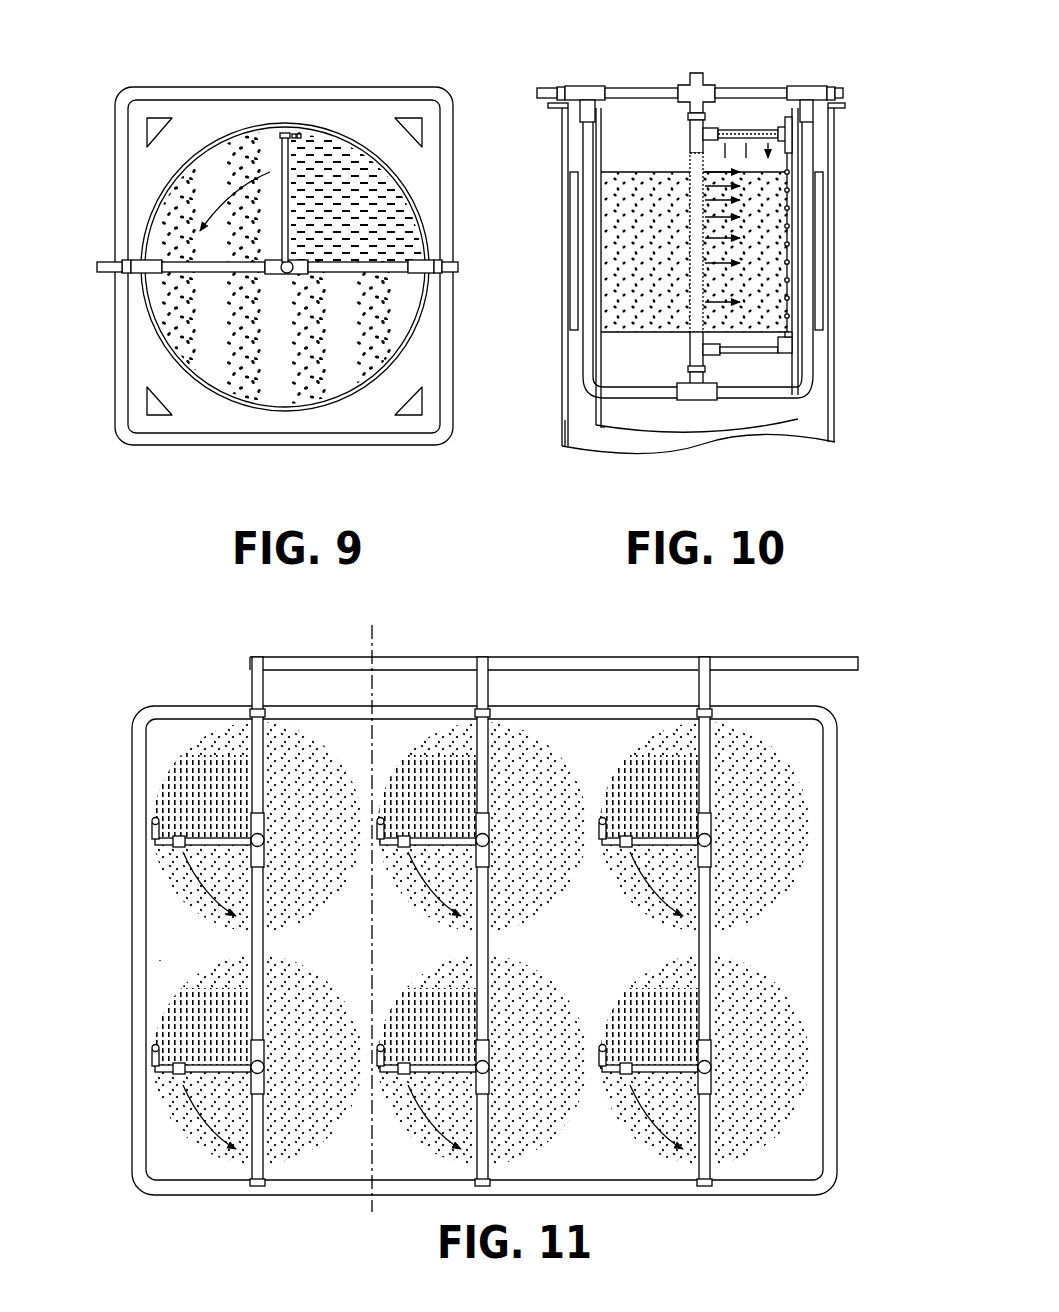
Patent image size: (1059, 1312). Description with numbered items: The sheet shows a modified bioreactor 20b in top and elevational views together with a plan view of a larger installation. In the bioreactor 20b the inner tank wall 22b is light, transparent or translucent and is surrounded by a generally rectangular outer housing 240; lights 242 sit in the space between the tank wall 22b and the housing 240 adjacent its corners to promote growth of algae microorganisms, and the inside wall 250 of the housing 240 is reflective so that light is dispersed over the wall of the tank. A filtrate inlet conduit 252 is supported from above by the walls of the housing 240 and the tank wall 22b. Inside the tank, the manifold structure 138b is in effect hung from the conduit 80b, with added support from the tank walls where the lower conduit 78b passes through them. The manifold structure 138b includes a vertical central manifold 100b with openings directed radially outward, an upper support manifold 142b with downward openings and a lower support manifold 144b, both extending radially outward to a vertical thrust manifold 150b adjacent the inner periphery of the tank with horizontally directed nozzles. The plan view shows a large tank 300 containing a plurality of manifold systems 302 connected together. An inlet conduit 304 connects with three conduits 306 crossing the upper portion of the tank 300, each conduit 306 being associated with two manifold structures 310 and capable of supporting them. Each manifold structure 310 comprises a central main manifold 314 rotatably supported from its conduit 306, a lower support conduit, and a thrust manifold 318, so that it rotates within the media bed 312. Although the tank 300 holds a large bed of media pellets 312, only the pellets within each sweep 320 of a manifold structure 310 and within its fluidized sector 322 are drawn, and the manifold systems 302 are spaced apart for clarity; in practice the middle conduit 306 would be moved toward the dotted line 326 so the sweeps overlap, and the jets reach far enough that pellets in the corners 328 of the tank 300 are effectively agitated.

In FIG. 9, the bioreactor 20b is at (364, 60).
In FIG. 10, the bioreactor 20b is at (737, 55).
In FIG. 9, the inner tank wall 22b is at (163, 349).
In FIG. 10, the inner tank wall 22b is at (600, 131).
In FIG. 9, the conduit 80b is at (185, 261).
In FIG. 10, the conduit 80b is at (650, 92).
In FIG. 10, the central manifold 100b is at (692, 168).
In FIG. 10, the manifold structure 138b is at (658, 434).
In FIG. 10, the upper support manifold 142b is at (745, 128).
In FIG. 10, the lower support manifold 144b is at (767, 355).
In FIG. 10, the thrust manifold 150b is at (790, 157).
In FIG. 9, the outer housing 240 is at (152, 448).
In FIG. 10, the outer housing 240 is at (562, 175).
In FIG. 9, the lights 242 is at (408, 117).
In FIG. 10, the lights 242 is at (818, 222).
In FIG. 10, the inside wall 250 is at (568, 420).
In FIG. 9, the filtrate inlet conduit 252 is at (103, 271).
In FIG. 10, the filtrate inlet conduit 252 is at (548, 89).
In FIG. 10, the lower conduit 78b is at (780, 400).
In FIG. 11, the tank 300 is at (140, 710).
In FIG. 11, the manifold systems 302 is at (410, 746).
In FIG. 11, the inlet conduit 304 is at (635, 656).
In FIG. 11, the conduits 306 is at (265, 692).
In FIG. 11, the manifold structures 310 is at (660, 825).
In FIG. 11, the media bed 312 is at (178, 947).
In FIG. 11, the central main manifold 314 is at (252, 841).
In FIG. 11, the thrust manifold 318 is at (150, 828).
In FIG. 11, the sweep 320 is at (805, 1024).
In FIG. 11, the fluidized sector 322 is at (169, 1029).
In FIG. 11, the dotted line 326 is at (377, 640).
In FIG. 11, the corners 328 is at (162, 745).